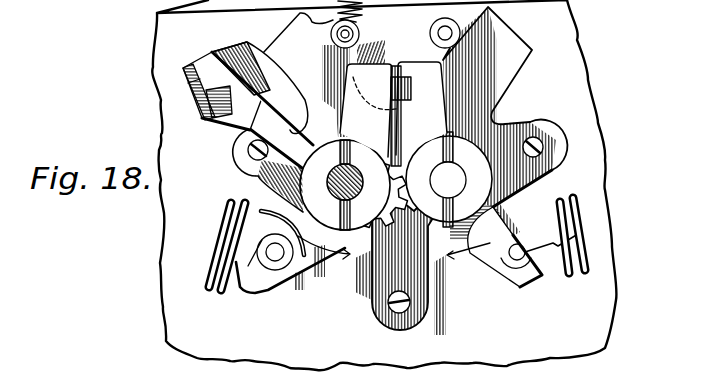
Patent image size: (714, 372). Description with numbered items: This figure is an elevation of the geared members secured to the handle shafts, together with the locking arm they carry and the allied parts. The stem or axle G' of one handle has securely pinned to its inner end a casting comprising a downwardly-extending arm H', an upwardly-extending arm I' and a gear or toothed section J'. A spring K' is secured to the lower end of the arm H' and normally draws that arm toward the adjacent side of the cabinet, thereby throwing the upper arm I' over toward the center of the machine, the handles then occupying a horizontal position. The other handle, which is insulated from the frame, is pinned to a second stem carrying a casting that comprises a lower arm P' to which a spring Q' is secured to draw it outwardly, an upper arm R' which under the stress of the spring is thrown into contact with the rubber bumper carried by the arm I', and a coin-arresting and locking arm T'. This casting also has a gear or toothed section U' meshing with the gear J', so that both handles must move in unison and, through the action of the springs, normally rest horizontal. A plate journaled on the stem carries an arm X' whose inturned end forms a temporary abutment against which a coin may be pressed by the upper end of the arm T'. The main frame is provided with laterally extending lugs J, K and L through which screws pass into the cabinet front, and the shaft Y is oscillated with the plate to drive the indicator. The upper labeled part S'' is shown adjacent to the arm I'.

The arm X' is at (215, 30).
The shaft Y is at (188, 83).
The coin-arresting and locking arm T' is at (198, 99).
The lug K is at (250, 170).
The spring Q' is at (259, 196).
The gear or toothed section U' is at (354, 185).
The upper arm R' is at (388, 110).
The upwardly-extending arm I' is at (419, 114).
The spring roller S'' is at (395, 32).
The stem or axle G' is at (465, 179).
The lug L is at (545, 132).
The spring K' is at (588, 235).
The downwardly-extending arm H' is at (494, 272).
The lug J is at (405, 267).
The gear or toothed section J' is at (362, 253).
The lower arm P' is at (290, 262).